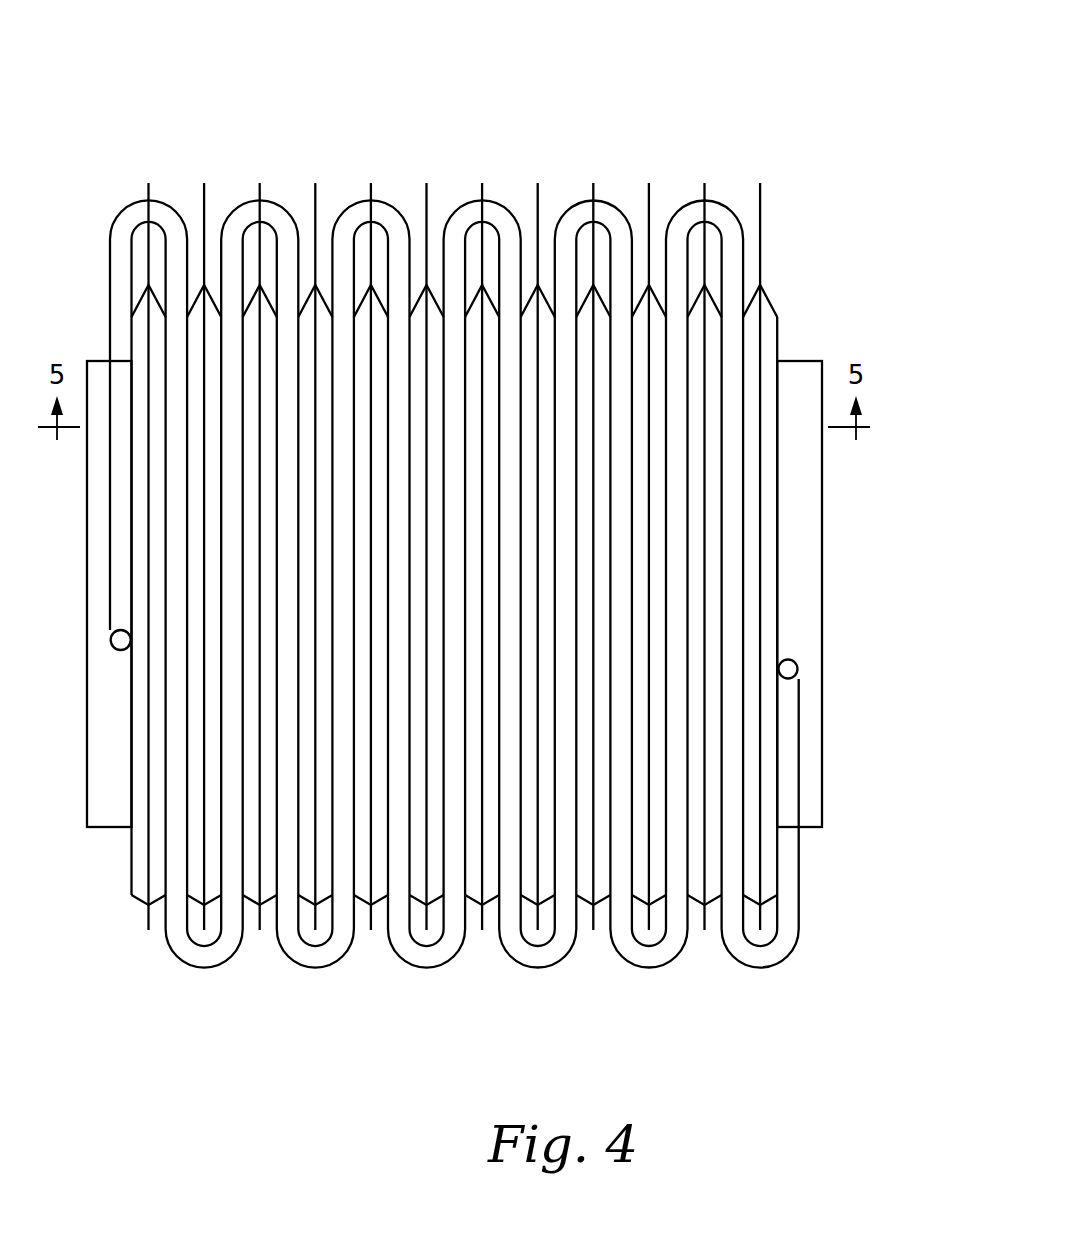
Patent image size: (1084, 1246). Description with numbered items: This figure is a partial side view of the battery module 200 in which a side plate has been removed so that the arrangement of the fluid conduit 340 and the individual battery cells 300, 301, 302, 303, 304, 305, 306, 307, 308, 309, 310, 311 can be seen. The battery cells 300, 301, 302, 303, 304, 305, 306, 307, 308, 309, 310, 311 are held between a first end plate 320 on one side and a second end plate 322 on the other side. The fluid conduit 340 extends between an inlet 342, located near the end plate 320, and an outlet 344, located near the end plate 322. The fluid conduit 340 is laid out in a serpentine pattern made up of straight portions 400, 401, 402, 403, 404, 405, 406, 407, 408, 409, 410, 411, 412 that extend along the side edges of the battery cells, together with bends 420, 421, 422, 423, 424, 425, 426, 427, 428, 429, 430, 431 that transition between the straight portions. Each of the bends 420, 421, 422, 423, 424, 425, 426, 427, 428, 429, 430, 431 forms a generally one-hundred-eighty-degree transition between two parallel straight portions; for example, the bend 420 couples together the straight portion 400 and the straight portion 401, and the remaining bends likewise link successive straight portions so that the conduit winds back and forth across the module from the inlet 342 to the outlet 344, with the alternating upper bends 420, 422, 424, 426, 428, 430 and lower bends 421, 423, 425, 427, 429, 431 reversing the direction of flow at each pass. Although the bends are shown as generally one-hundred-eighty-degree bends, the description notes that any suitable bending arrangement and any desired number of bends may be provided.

The battery module 200 is at (665, 68).
The battery cell 300 is at (143, 902).
The battery cell 301 is at (197, 906).
The battery cell 302 is at (252, 906).
The battery cell 303 is at (308, 906).
The battery cell 304 is at (363, 906).
The battery cell 305 is at (419, 906).
The battery cell 306 is at (474, 906).
The battery cell 307 is at (530, 906).
The battery cell 308 is at (585, 906).
The battery cell 309 is at (641, 906).
The battery cell 310 is at (696, 906).
The battery cell 311 is at (752, 906).
The end plate 320 is at (87, 760).
The end plate 322 is at (822, 710).
The fluid conduit 340 is at (95, 257).
The inlet 342 is at (120, 603).
The outlet 344 is at (787, 797).
The straight portion 400 is at (110, 317).
The straight portion 401 is at (188, 238).
The straight portion 402 is at (220, 247).
The straight portion 403 is at (300, 237).
The straight portion 404 is at (332, 247).
The straight portion 405 is at (413, 237).
The straight portion 406 is at (443, 247).
The straight portion 407 is at (523, 237).
The straight portion 408 is at (555, 247).
The straight portion 409 is at (635, 237).
The straight portion 410 is at (665, 247).
The straight portion 411 is at (747, 237).
The straight portion 412 is at (800, 873).
The bend 420 is at (120, 212).
The bend 421 is at (210, 969).
The bend 422 is at (250, 200).
The bend 423 is at (318, 970).
The bend 424 is at (362, 200).
The bend 425 is at (427, 970).
The bend 426 is at (473, 200).
The bend 427 is at (543, 970).
The bend 428 is at (583, 200).
The bend 429 is at (653, 970).
The bend 430 is at (695, 200).
The bend 431 is at (773, 970).